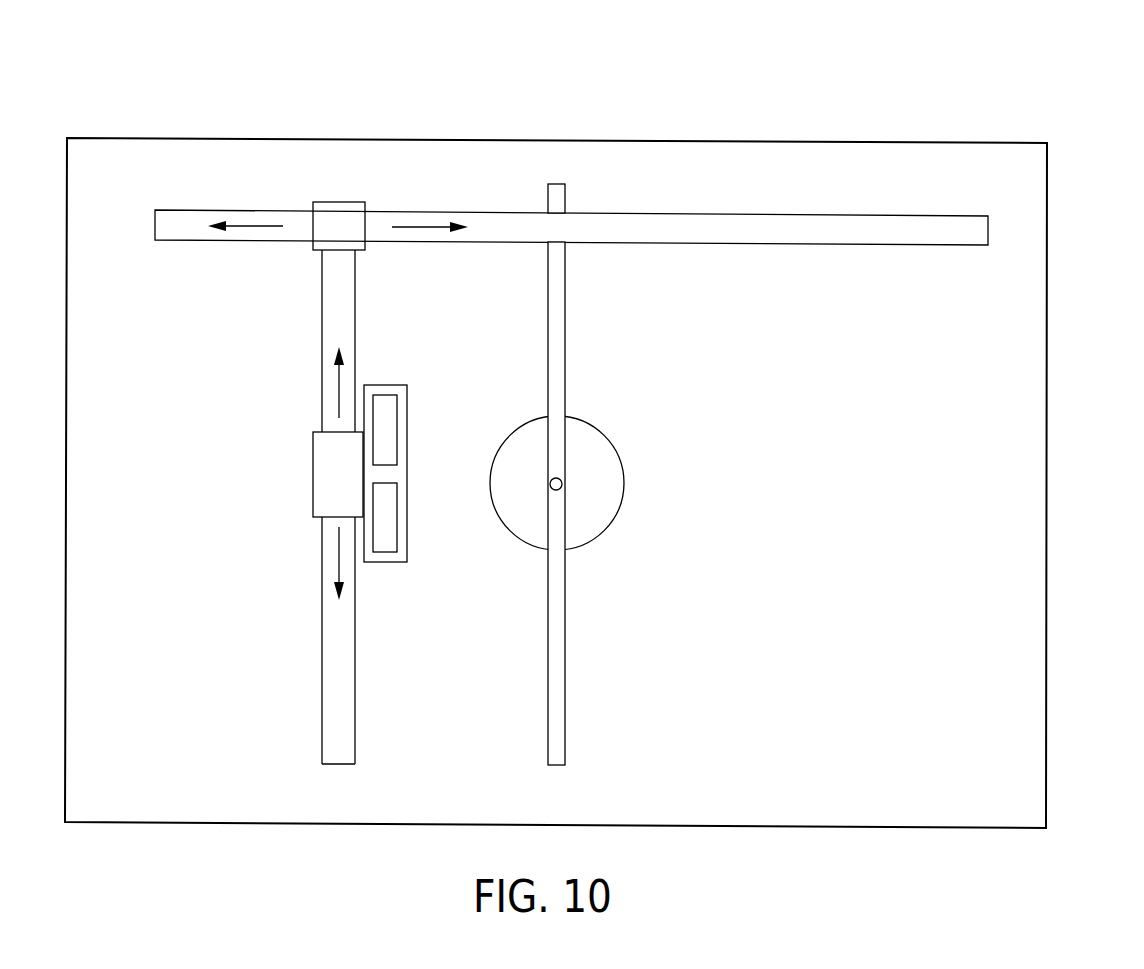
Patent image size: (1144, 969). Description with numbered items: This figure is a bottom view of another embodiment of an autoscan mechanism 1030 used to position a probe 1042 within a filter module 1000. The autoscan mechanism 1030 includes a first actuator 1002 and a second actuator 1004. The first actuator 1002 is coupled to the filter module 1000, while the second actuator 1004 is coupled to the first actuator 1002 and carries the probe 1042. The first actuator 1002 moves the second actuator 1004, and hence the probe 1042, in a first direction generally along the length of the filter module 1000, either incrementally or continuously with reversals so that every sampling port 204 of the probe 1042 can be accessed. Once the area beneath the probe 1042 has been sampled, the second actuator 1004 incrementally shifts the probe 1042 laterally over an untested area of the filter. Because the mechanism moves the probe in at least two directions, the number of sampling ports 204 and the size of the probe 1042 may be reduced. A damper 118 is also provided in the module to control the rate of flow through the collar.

The filter module 1000 is at (1106, 184).
The autoscan mechanism 1030 is at (240, 103).
The first actuator 1002 is at (808, 213).
The second actuator 1004 is at (337, 677).
The probe 1042 is at (418, 436).
The sampling ports 204 is at (388, 418).
The damper 118 is at (612, 445).